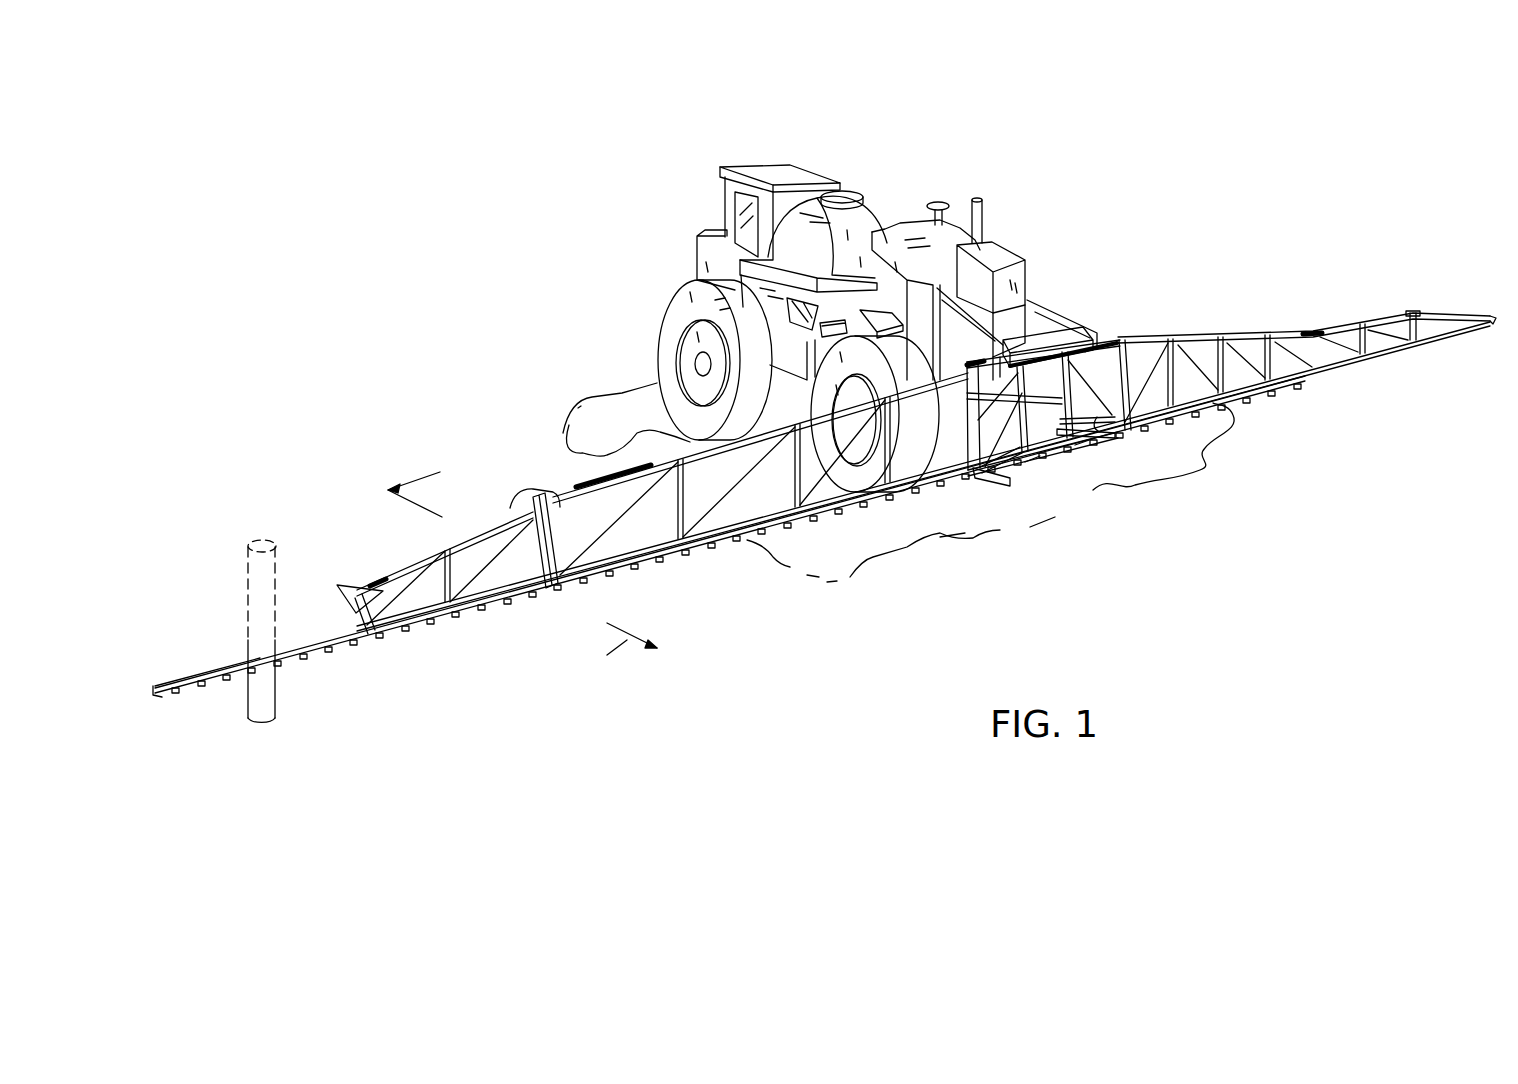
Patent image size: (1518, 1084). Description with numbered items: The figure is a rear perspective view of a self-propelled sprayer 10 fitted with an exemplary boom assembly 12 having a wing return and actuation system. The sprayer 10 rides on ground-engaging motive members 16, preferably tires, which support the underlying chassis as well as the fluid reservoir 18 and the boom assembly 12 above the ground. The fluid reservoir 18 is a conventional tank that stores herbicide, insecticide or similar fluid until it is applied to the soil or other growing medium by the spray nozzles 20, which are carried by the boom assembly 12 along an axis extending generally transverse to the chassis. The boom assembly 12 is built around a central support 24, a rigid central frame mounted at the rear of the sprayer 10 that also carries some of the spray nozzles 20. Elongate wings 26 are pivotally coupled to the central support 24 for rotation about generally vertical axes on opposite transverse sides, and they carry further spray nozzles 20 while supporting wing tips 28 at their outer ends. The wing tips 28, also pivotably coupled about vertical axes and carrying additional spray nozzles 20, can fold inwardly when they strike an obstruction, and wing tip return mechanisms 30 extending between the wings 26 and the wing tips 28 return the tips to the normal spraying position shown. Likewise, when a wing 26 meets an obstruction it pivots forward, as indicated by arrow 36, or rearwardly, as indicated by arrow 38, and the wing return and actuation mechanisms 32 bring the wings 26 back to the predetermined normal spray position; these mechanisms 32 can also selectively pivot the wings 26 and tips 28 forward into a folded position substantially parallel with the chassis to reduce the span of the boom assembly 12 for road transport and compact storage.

The self-propelled sprayer 10 is at (660, 180).
The boom assembly 12 is at (1226, 333).
The ground-engaging motive members 16 is at (665, 335).
The fluid reservoir 18 is at (885, 213).
The spray nozzles 20 is at (340, 648).
The central support 24 is at (1105, 340).
The wings 26 is at (695, 453).
The wing tips 28 is at (1405, 313).
The wing tip return mechanisms 30 is at (378, 578).
The wing return and actuation mechanisms 32 is at (1032, 470).
The arrow indicating forward pivoting 36 is at (430, 490).
The arrow indicating rearward pivoting 38 is at (627, 653).